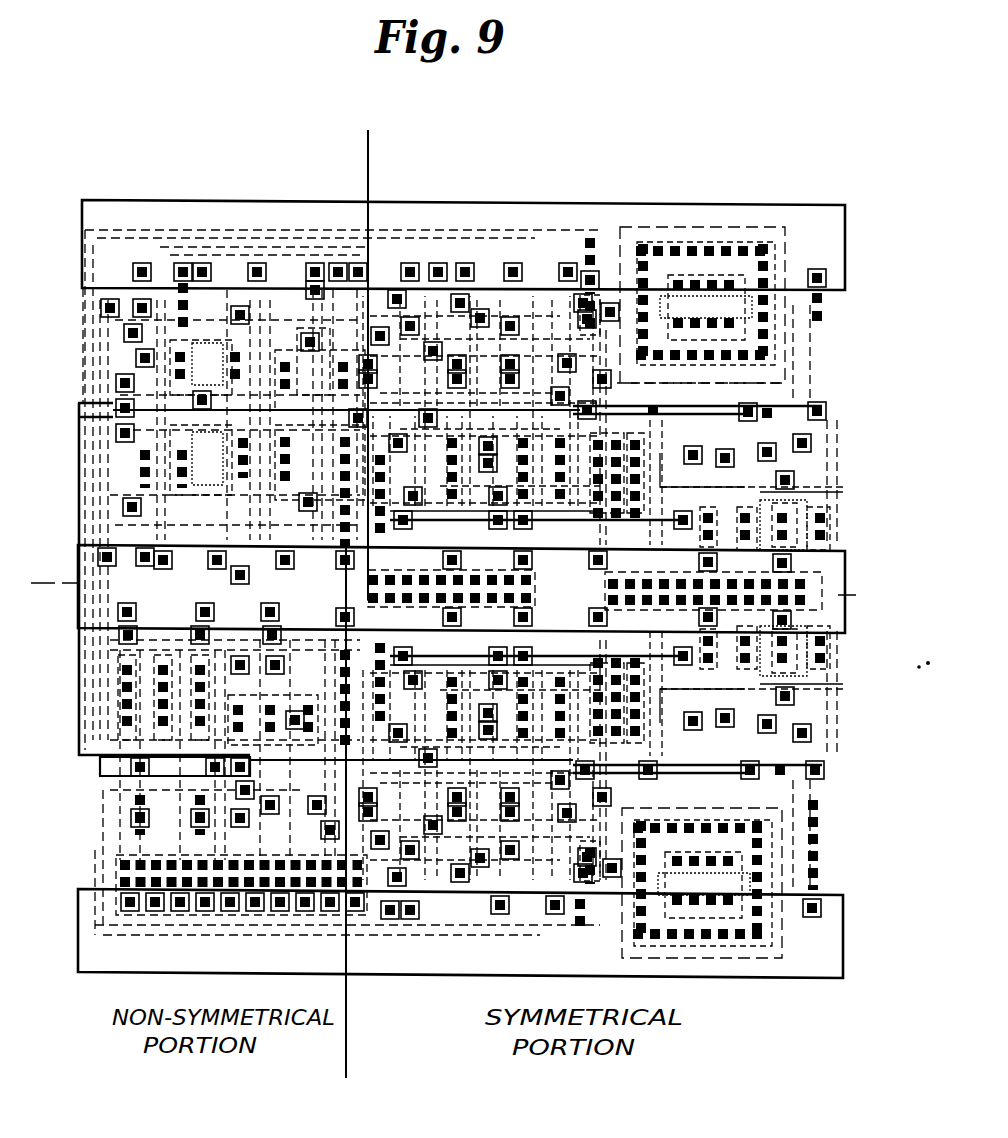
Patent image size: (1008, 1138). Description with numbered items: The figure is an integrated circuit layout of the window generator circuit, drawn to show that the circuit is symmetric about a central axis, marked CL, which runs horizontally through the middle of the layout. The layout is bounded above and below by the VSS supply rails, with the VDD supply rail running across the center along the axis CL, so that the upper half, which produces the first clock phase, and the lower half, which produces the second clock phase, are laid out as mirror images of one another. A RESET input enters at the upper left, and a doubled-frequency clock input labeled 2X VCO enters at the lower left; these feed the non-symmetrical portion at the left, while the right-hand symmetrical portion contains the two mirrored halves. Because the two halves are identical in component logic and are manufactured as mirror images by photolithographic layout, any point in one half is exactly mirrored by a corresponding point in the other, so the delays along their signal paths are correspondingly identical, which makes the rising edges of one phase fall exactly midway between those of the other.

The VSS power supply rail VSS is at (847, 228).
The VDD power supply rail VDD is at (846, 555).
The reset input line RESET is at (78, 406).
The center line of symmetry CL is at (888, 584).
The 2X VCO clock input 2X VCO is at (105, 762).